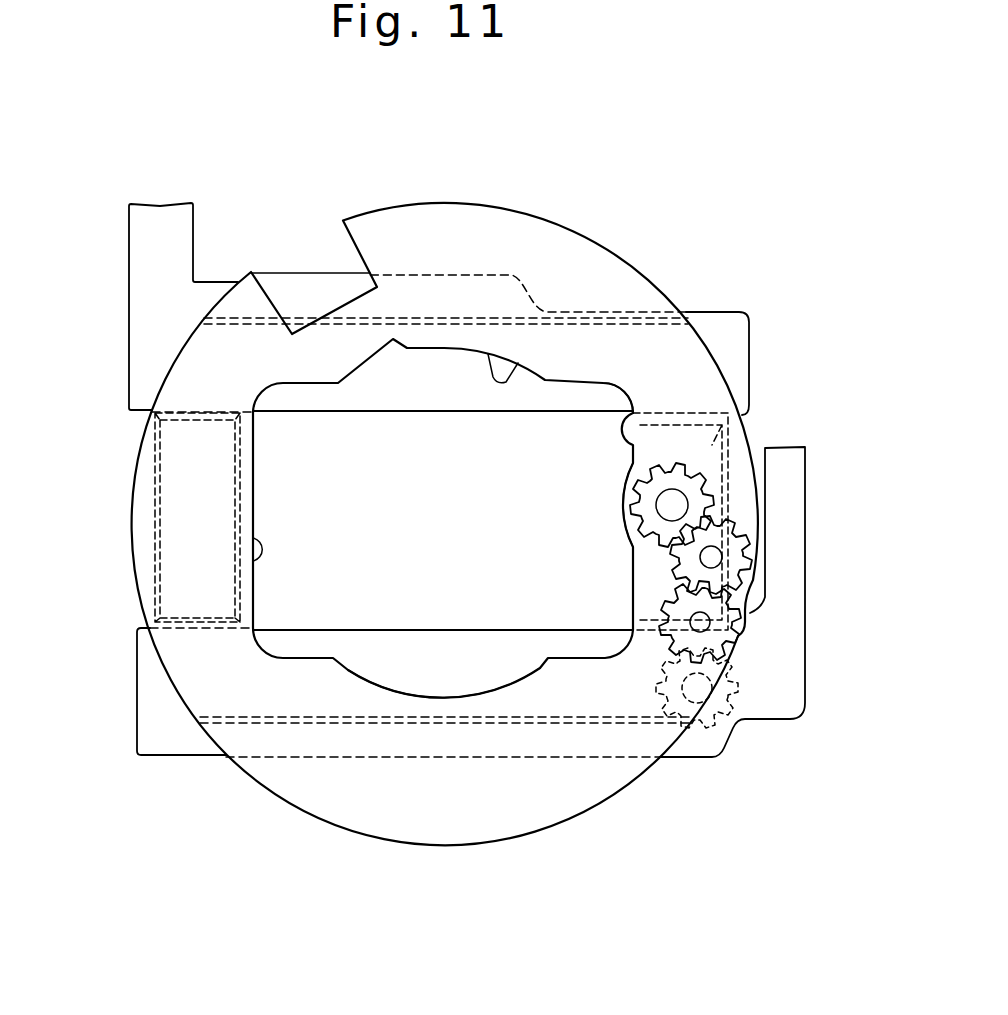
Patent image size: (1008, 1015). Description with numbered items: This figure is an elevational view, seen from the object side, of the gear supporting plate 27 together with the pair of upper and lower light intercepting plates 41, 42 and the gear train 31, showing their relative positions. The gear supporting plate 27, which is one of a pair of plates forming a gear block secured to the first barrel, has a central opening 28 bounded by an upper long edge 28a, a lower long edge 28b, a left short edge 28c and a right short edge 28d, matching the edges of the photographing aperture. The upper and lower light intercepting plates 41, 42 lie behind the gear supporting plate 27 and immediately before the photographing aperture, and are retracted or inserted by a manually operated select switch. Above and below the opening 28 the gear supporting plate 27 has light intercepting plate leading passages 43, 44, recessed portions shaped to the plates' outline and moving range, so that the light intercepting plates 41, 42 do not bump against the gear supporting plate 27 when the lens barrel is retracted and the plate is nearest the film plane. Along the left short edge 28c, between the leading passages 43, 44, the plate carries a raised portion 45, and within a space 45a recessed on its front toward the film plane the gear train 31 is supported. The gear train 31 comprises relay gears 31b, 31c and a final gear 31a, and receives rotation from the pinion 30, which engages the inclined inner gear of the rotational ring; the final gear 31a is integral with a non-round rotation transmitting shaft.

The gear supporting plate 27 is at (453, 220).
The central opening 28 is at (380, 600).
The upper long edge 28a is at (510, 382).
The lower long edge 28b is at (446, 698).
The left short edge 28c is at (633, 406).
The right short edge 28d is at (257, 560).
The pinion 30 is at (712, 735).
The gear train 31 is at (770, 535).
The final gear 31a is at (702, 478).
The relay gear 31b is at (731, 536).
The relay gear 31c is at (760, 622).
The upper light intercepting plate 41 is at (143, 306).
The lower light intercepting plate 42 is at (162, 740).
The light intercepting plate leading passage 43 is at (197, 370).
The light intercepting plate leading passage 44 is at (232, 678).
The raised portion 45 is at (748, 423).
The space 45a is at (633, 500).